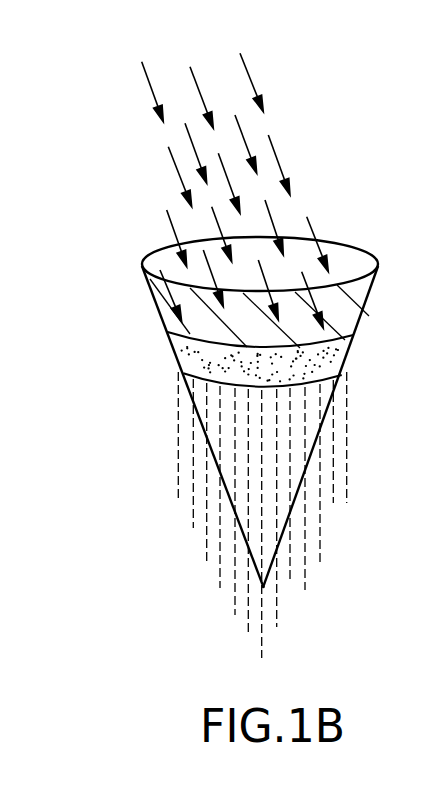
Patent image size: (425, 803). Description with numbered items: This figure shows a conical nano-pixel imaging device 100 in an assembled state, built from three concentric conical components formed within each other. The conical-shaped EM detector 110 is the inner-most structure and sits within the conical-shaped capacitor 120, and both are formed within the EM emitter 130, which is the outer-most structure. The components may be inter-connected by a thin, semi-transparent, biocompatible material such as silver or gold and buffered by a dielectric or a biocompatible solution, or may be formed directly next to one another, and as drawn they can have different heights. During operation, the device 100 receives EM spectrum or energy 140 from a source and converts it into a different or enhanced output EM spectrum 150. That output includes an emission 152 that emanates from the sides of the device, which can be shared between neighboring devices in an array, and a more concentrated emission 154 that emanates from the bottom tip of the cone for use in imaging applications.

The conical nano-pixel imaging device 100 is at (355, 262).
The conical-shaped EM detector 110 is at (162, 305).
The conical-shaped capacitor 120 is at (180, 360).
The EM emitter 130 is at (213, 415).
The EM spectrum or energy 140 is at (267, 122).
The output EM spectrum 150 is at (328, 508).
The side emission 152 is at (172, 485).
The concentrated tip emission 154 is at (278, 599).